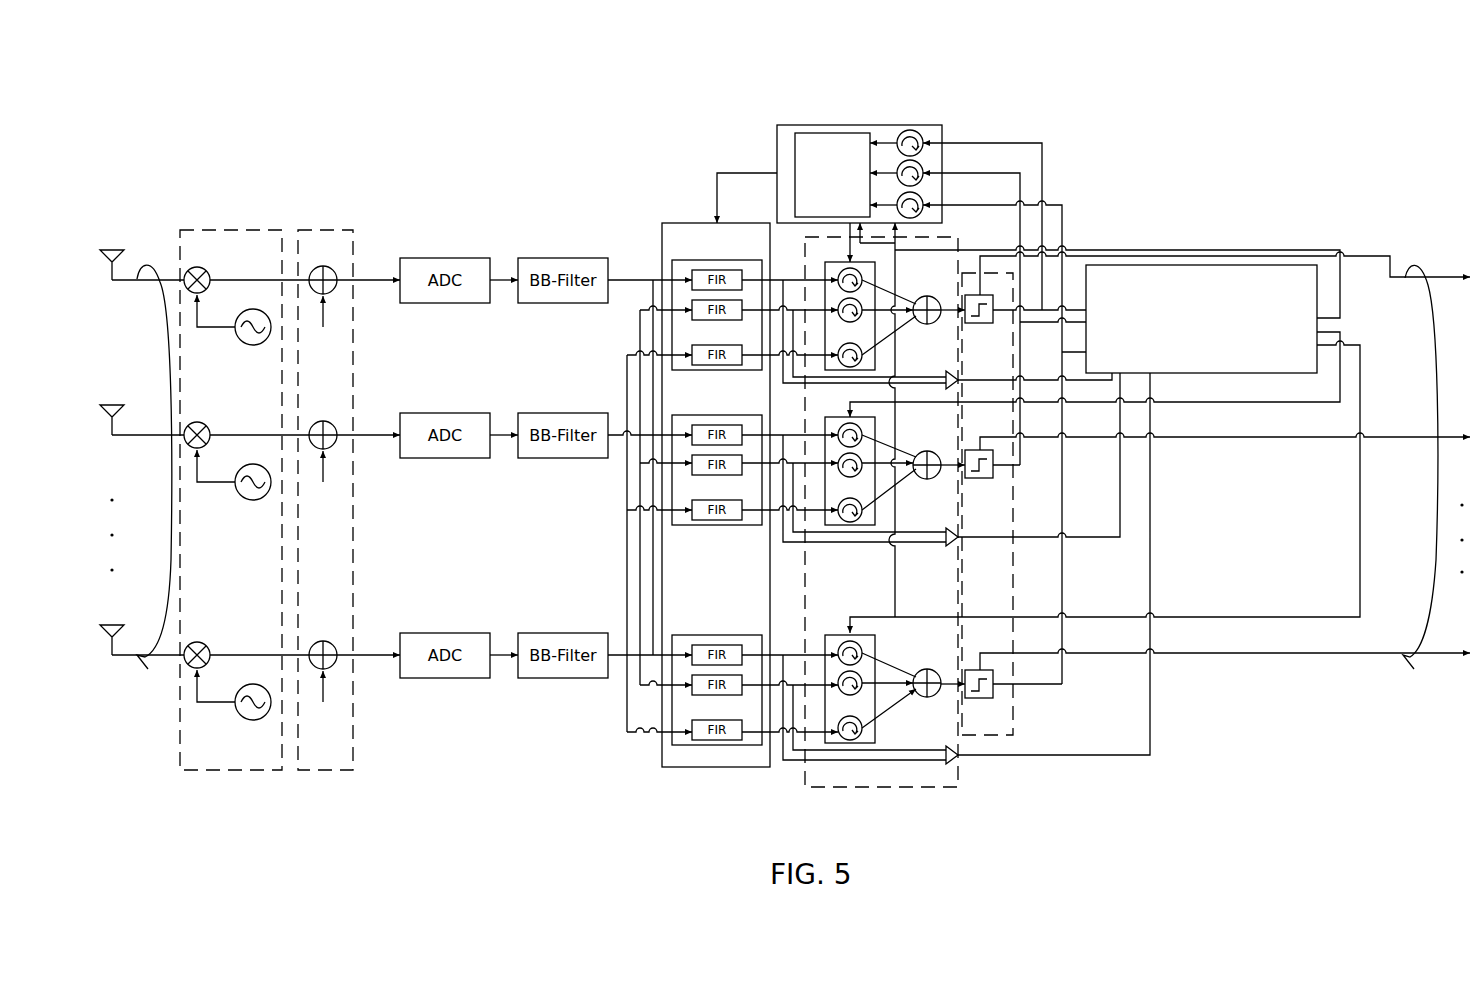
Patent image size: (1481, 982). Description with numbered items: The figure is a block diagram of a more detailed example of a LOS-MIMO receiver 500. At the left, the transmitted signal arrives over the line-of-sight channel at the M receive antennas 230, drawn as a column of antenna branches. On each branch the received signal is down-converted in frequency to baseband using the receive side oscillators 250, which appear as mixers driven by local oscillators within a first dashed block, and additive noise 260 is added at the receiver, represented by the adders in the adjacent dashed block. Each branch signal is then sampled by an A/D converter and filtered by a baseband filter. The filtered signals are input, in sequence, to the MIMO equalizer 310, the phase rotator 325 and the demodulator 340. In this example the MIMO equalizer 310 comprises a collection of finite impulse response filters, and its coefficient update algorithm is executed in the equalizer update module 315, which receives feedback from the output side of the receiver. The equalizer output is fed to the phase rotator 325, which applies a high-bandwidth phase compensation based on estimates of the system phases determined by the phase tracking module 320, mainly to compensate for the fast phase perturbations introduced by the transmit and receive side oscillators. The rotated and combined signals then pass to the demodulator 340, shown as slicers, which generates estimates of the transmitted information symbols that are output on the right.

The LOS-MIMO receiver 500 is at (208, 93).
The receive antennas 230 is at (132, 702).
The receive side oscillators 250 is at (232, 222).
The additive noise 260 is at (352, 222).
The MIMO equalizer 310 is at (672, 215).
The equalizer update module 315 is at (818, 122).
The phase tracking module 320 is at (1201, 319).
The phase rotator module 325 is at (885, 788).
The demodulator 340 is at (985, 736).